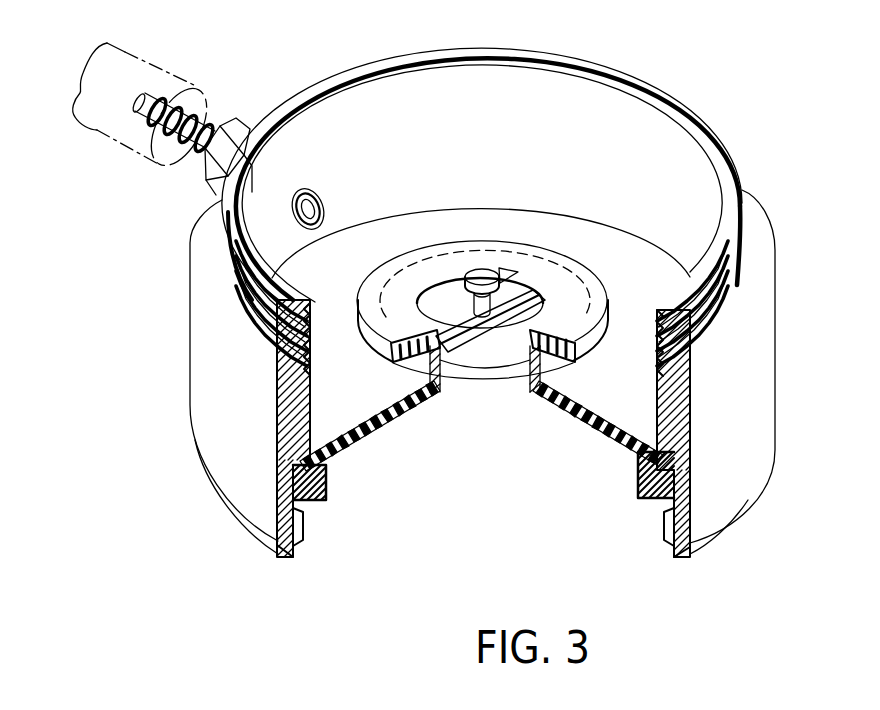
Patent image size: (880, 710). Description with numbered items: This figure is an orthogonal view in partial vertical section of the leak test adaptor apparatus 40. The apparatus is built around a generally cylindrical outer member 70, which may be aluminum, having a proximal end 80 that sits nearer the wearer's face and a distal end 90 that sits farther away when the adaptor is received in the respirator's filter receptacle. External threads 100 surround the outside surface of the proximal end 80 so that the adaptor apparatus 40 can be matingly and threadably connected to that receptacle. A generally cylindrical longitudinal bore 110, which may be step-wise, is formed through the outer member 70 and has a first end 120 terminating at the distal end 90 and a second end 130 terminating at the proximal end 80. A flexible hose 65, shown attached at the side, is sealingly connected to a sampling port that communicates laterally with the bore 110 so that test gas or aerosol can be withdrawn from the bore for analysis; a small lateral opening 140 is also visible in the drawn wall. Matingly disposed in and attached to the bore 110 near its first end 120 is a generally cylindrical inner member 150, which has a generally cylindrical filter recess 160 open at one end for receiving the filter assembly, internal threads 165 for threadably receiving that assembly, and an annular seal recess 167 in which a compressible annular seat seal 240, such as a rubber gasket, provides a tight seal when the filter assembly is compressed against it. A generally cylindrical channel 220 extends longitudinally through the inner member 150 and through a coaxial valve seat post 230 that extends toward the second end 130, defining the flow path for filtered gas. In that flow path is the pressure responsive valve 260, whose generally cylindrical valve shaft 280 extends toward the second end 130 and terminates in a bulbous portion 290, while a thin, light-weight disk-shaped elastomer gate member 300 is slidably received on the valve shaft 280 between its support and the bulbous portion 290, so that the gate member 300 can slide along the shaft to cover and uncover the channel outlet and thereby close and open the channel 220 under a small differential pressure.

The adaptor apparatus 40 is at (377, 52).
The hose 65 is at (97, 126).
The outer member 70 is at (282, 442).
The proximal end 80 is at (312, 334).
The distal end 90 is at (282, 537).
The external threads 100 is at (675, 95).
The longitudinal bore 110 is at (485, 108).
The first end 120 is at (280, 512).
The second end 130 is at (317, 302).
The port opening 140 is at (327, 205).
The inner member 150 is at (352, 440).
The filter recess 160 is at (385, 423).
The internal threads 165 is at (298, 540).
The annular seal recess 167 is at (663, 418).
The channel 220 is at (532, 383).
The valve seat post 230 is at (552, 343).
The seat seal 240 is at (314, 500).
The pressure responsive valve 260 is at (468, 238).
The valve shaft 280 is at (472, 312).
The bulbous portion 290 is at (488, 272).
The gate member 300 is at (575, 300).